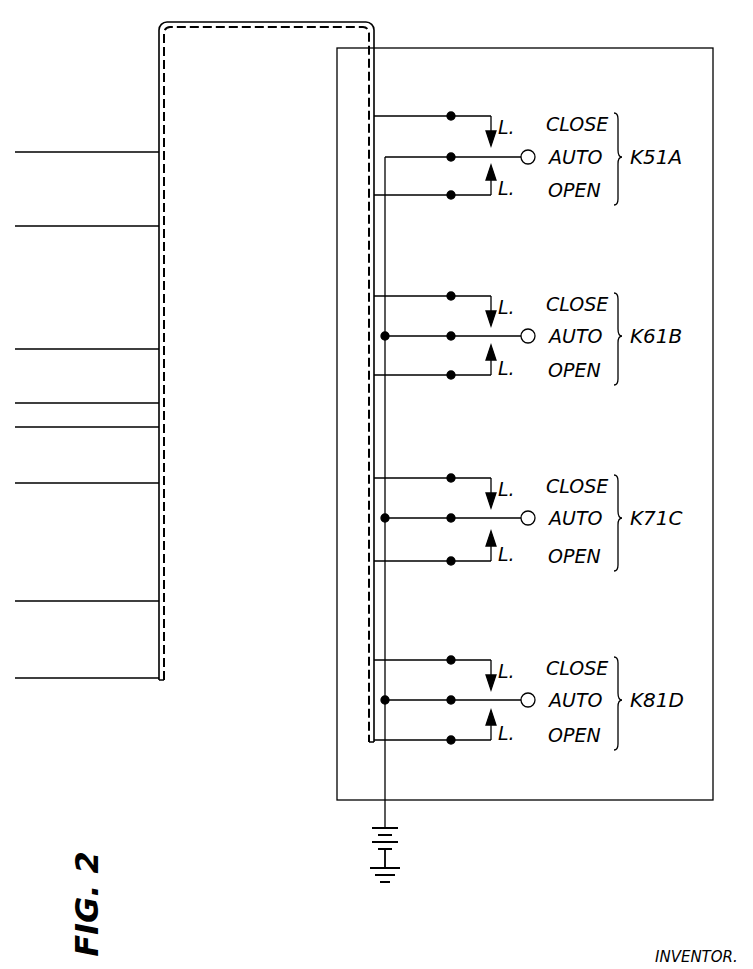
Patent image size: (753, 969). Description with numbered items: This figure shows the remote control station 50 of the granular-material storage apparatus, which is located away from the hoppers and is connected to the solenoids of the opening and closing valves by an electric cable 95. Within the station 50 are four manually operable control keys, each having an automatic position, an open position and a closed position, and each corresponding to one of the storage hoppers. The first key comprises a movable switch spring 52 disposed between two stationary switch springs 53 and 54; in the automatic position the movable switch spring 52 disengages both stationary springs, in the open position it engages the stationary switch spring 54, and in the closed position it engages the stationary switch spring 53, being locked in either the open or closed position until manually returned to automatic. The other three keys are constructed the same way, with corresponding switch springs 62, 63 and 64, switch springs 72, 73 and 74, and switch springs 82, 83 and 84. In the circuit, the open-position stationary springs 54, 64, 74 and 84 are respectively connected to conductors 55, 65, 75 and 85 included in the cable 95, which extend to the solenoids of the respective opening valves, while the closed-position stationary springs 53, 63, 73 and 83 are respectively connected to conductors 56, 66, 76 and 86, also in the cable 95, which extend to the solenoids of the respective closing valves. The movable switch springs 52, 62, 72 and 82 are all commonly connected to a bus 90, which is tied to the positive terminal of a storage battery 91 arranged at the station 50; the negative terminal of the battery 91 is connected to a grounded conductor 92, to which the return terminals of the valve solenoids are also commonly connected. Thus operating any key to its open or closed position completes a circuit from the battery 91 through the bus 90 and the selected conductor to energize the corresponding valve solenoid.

The remote control station 50 is at (509, 424).
The movable switch spring 52 is at (466, 155).
The stationary switch spring 53 is at (462, 114).
The stationary switch spring 54 is at (462, 198).
The conductor 55 is at (123, 427).
The conductor 56 is at (128, 678).
The movable switch spring 62 is at (466, 334).
The stationary switch spring 63 is at (460, 294).
The stationary switch spring 64 is at (462, 378).
The conductor 65 is at (118, 152).
The conductor 66 is at (133, 403).
The movable switch spring 72 is at (466, 516).
The stationary switch spring 73 is at (468, 466).
The stationary switch spring 74 is at (462, 564).
The conductor 75 is at (92, 483).
The conductor 76 is at (123, 601).
The movable switch spring 82 is at (466, 698).
The stationary switch spring 83 is at (468, 648).
The stationary switch spring 84 is at (462, 743).
The conductor 85 is at (130, 226).
The conductor 86 is at (113, 349).
The bus 90 is at (388, 779).
The storage battery 91 is at (399, 836).
The grounded conductor 92 is at (377, 867).
The electric cable 95 is at (164, 88).